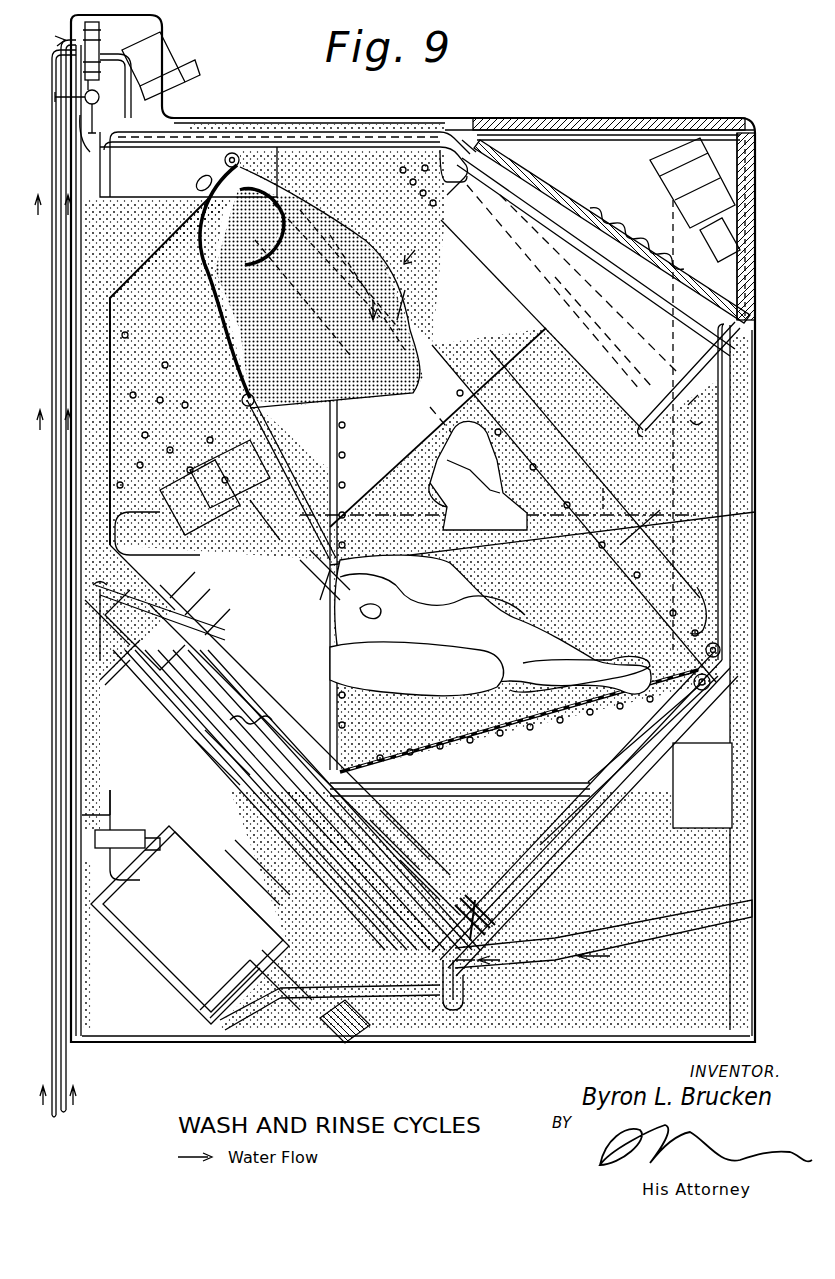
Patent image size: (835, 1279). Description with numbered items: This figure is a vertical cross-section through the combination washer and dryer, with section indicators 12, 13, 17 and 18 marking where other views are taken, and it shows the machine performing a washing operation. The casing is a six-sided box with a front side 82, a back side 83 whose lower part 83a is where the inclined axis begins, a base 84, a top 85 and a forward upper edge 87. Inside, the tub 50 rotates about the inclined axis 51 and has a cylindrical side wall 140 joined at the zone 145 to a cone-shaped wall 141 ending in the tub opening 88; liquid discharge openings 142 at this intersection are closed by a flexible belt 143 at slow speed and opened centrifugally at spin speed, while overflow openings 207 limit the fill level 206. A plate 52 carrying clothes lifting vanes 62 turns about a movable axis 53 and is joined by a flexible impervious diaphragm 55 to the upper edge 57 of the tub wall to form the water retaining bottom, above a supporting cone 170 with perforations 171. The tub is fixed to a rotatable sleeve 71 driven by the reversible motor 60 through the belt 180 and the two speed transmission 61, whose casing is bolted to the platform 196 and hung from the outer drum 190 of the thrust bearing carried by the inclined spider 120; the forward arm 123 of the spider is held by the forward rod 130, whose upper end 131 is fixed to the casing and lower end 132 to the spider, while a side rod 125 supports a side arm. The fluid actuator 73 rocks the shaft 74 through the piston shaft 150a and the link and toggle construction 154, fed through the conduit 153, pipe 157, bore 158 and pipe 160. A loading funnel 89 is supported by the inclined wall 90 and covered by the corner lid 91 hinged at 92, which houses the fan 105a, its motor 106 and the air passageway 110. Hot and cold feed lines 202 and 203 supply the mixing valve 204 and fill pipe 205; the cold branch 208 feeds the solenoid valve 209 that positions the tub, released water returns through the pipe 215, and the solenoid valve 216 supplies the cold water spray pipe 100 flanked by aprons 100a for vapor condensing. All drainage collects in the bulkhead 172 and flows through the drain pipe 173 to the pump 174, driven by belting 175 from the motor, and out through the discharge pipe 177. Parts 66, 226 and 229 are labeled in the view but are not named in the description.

The section line 12- 12 is at (726, 1062).
The section line 13- 13 is at (784, 140).
The section line 17- 17 is at (786, 695).
The section line 18- 18 is at (720, 273).
The tub 50 is at (160, 212).
The inclined axis 51 is at (510, 384).
The plate 52 is at (348, 694).
The movable axis 53 is at (628, 530).
The flexible impervious diaphragm 55 is at (208, 310).
The upper edge of tub side wall 57 is at (196, 186).
The motor 60 is at (196, 1030).
The two-speed transmission 61 is at (188, 700).
The clothes lifting vanes 62 is at (422, 468).
The spray arm pivot 66 is at (246, 396).
The rotatable sleeve 71 is at (248, 632).
The actuator 73 is at (230, 512).
The rockable shaft 74 is at (340, 596).
The front side of casing 82 is at (756, 840).
The back side of casing 83 is at (82, 390).
The lower part of back side 83a is at (82, 818).
The bottom or base 84 is at (530, 1043).
The top 85 is at (292, 117).
The forward upper edge 87 is at (758, 118).
The tub opening 88 is at (700, 420).
The loading and unloading funnel 89 is at (672, 380).
The inclined wall 90 is at (468, 135).
The corner lid 91 is at (610, 117).
The hinge 92 is at (453, 125).
The cold water spray pipe 100 is at (240, 118).
The vertical aprons 100a is at (122, 200).
The blower or fan 105a is at (610, 226).
The fan motor 106 is at (705, 142).
The passageway 110 is at (738, 238).
The inclined metal spider 120 is at (376, 838).
The forward arm 123 is at (400, 872).
The side rod 125 is at (285, 352).
The forward rod 130 is at (584, 838).
The upper end of forward rod 131 is at (722, 760).
The lower end of forward rod 132 is at (445, 910).
The cylindrical side wall 140 is at (136, 262).
The cone-shaped side wall 141 is at (388, 170).
The liquid discharge openings 142 is at (692, 632).
The flexible belt 143 is at (226, 160).
The cylindrical zone 145 is at (548, 470).
The piston shaft 150a is at (252, 536).
The conduit 153 is at (175, 478).
The pipe 157 is at (118, 510).
The link and toggle construction 154 is at (300, 512).
The bore 158 is at (170, 715).
The pipe 160 is at (135, 835).
The lower supporting cone construction 170 is at (504, 790).
The perforations 171 is at (456, 772).
The bulkhead 172 is at (604, 932).
The drain pipe 173 is at (460, 1000).
The pump 174 is at (342, 1035).
The belting 175 is at (335, 945).
The discharge pipe 177 is at (255, 1040).
The belt 180 is at (236, 840).
The outer drum 190 is at (262, 722).
The platform 196 is at (220, 760).
The hot water feed line 202 is at (58, 1117).
The cold water feed line 203 is at (70, 1050).
The mixing and control solenoid valve 204 is at (100, 42).
The tub fill pipe 205 is at (468, 160).
The fill level 206 is at (604, 512).
The overflow openings 207 is at (732, 434).
The branch 208 is at (100, 898).
The solenoid valve 209 is at (130, 860).
The pipe 215 is at (100, 628).
The solenoid valve 216 is at (93, 152).
The dispenser body 226 is at (150, 52).
The dispenser spout 229 is at (145, 80).